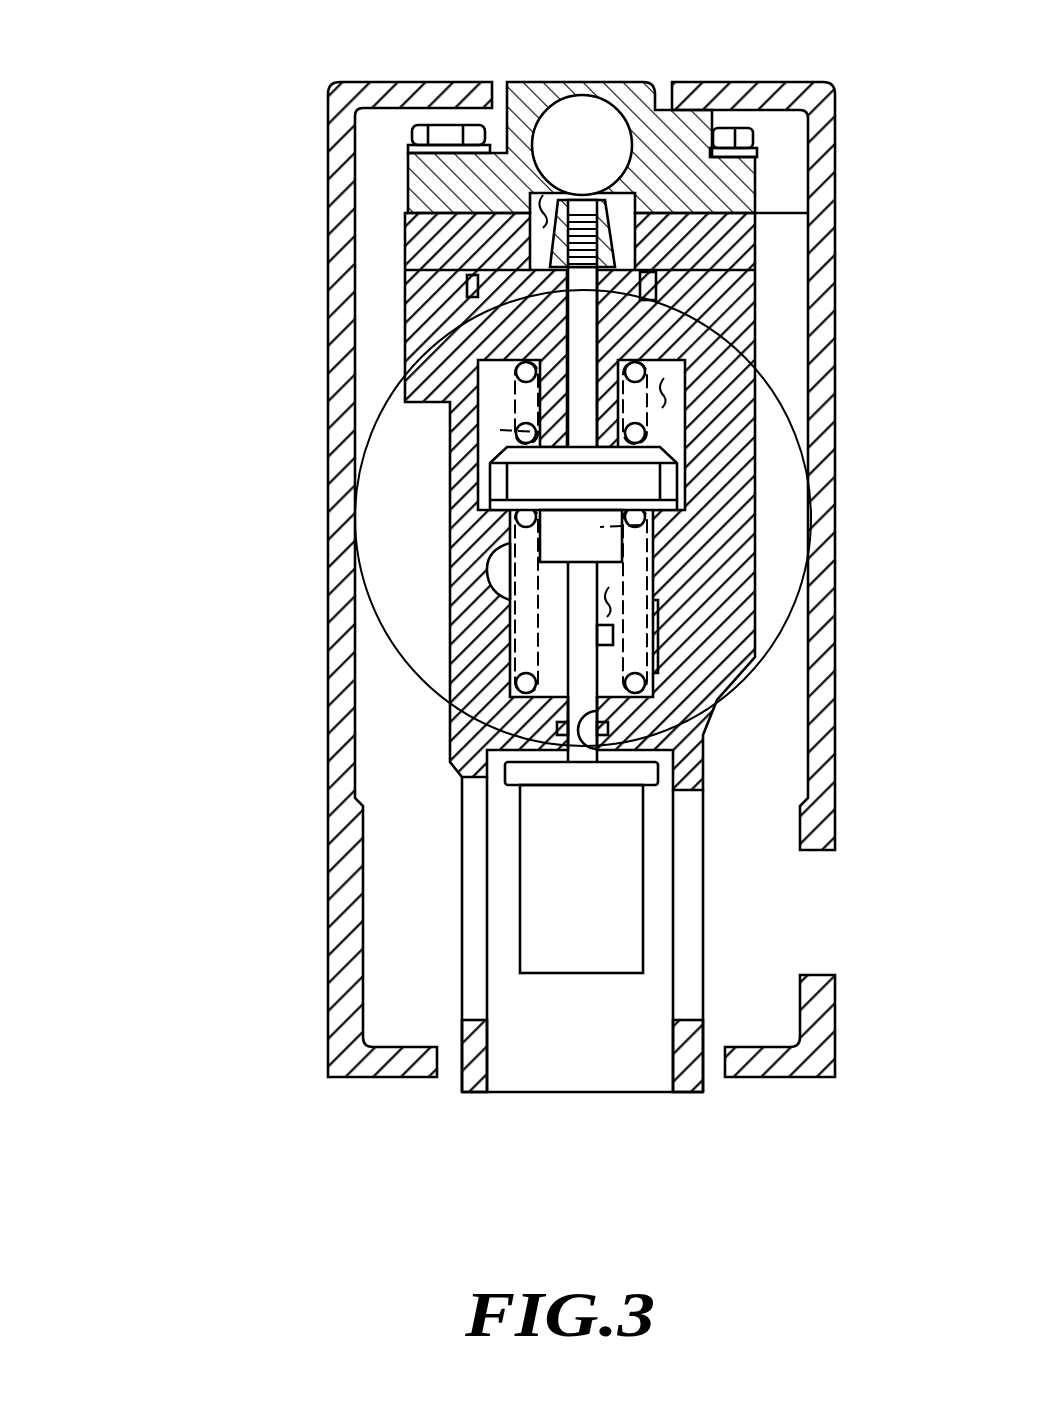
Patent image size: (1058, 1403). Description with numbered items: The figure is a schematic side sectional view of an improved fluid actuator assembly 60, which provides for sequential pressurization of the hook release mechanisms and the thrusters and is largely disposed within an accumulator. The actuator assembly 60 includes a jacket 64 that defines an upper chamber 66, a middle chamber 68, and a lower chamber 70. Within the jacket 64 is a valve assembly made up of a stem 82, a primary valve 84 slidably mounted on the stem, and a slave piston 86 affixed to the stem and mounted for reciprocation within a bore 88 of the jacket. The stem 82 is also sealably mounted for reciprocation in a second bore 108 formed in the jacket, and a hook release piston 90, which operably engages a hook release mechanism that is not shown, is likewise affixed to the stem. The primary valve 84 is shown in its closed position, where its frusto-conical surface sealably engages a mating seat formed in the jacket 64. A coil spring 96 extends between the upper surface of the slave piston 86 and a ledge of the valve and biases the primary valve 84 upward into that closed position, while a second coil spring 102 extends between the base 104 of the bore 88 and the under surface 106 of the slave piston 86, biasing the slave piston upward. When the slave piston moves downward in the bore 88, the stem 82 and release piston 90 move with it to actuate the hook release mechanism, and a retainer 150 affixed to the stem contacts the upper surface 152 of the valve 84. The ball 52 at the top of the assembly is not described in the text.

The ball 52 is at (615, 110).
The fluid actuator assembly 60 is at (153, 301).
The jacket 64 is at (757, 462).
The upper chamber 66 is at (523, 208).
The middle chamber 68 is at (665, 387).
The lower chamber 70 is at (615, 590).
The stem 82 is at (655, 277).
The primary valve 84 is at (500, 393).
The slave piston 86 is at (640, 435).
The bore 88 is at (495, 571).
The hook release piston 90 is at (643, 913).
The coil spring 96 is at (500, 430).
The coil spring 102 is at (640, 525).
The base 104 is at (655, 665).
The under surface 106 is at (495, 535).
The bore 108 is at (600, 753).
The retainer 150 is at (607, 205).
The upper surface 152 is at (487, 277).